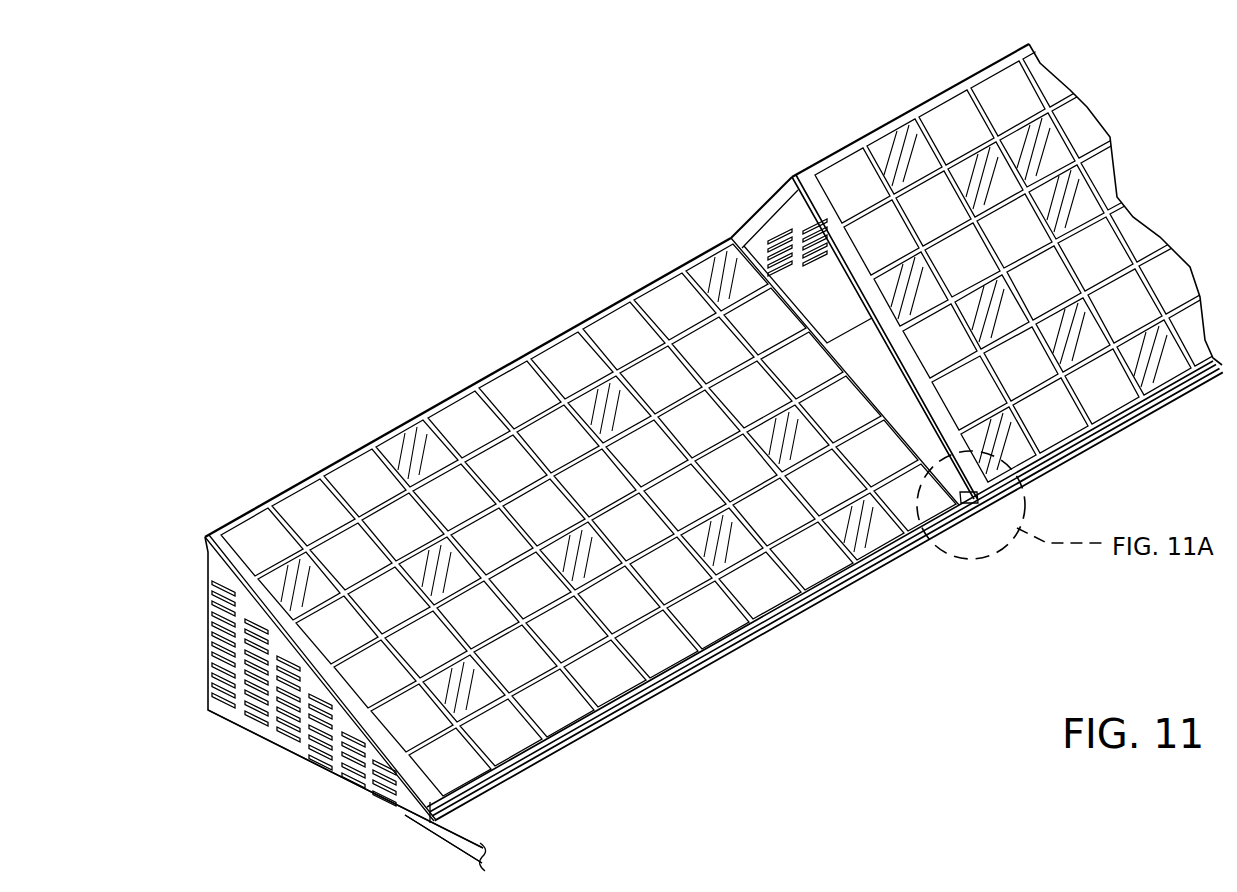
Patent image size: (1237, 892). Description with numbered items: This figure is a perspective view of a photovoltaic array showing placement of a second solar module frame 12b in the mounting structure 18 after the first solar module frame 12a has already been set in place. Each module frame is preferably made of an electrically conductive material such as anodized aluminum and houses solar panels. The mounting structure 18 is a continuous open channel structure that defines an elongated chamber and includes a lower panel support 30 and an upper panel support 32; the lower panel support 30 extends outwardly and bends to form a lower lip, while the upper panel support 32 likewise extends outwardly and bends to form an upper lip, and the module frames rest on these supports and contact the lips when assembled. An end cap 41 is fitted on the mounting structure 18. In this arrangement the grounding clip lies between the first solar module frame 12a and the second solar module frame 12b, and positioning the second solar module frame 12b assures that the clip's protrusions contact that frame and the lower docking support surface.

The first solar module frame 12a is at (208, 533).
The second solar module frame 12b is at (805, 170).
The mounting structure 18 is at (790, 620).
The lower panel support 30 is at (518, 768).
The upper panel support 32 is at (760, 232).
The end cap 41 is at (415, 800).